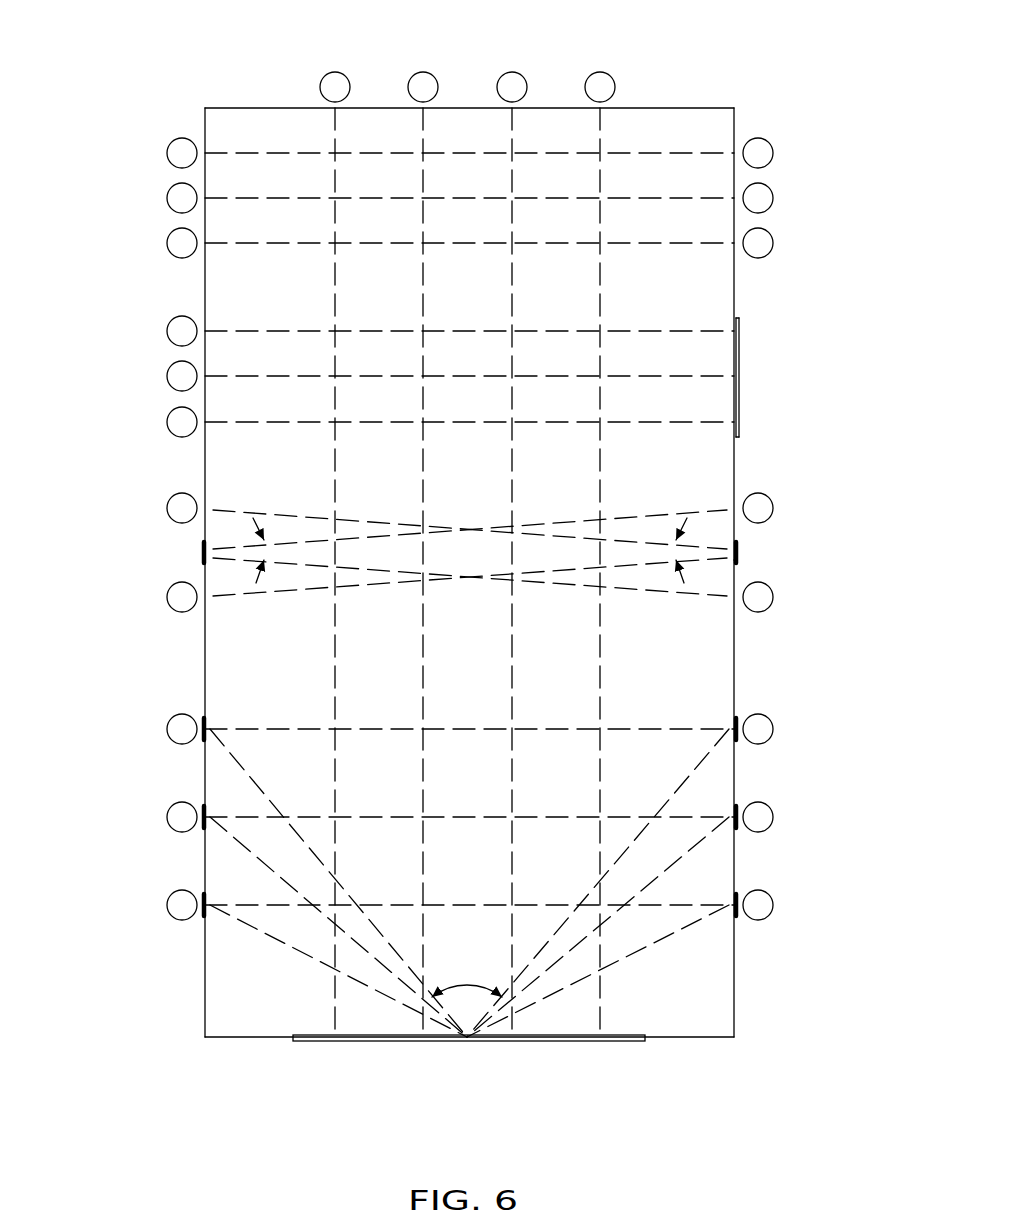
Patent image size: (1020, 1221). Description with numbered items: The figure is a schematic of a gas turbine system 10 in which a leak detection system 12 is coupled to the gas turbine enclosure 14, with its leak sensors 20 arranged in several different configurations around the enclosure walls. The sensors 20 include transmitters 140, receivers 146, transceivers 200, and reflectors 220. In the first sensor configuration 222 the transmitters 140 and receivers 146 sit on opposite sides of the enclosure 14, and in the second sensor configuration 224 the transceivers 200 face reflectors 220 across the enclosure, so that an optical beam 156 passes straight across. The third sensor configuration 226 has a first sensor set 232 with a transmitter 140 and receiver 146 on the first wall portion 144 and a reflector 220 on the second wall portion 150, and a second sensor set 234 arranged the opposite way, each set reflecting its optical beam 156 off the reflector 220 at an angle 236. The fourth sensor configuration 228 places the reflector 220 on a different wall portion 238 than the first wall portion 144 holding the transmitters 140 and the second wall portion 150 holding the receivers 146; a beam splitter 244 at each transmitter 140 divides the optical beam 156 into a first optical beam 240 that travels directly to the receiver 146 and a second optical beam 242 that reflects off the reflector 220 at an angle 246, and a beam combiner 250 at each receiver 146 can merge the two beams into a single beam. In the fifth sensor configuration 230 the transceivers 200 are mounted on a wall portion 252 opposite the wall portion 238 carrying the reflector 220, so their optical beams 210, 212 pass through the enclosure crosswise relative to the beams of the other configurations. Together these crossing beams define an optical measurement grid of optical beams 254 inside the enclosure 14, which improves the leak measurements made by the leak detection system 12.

The gas turbine system 10 is at (782, 1058).
The leak detection system 12 is at (806, 46).
The gas turbine enclosure 14 is at (735, 1006).
The leak sensors 20 is at (99, 64).
The transmitters 140 is at (167, 243).
The first wall portion 144 is at (205, 117).
The receivers 146 is at (773, 243).
The second wall portion 150 is at (738, 121).
The optical beam 156 is at (248, 153).
The transceivers 200 is at (408, 87).
The optical beam 210 is at (424, 320).
The optical beam 212 is at (218, 331).
The reflectors 220 is at (740, 362).
The first sensor configuration 222 is at (124, 253).
The second sensor configuration 224 is at (124, 317).
The third sensor configuration 226 is at (127, 623).
The fourth sensor configuration 228 is at (127, 687).
The fifth sensor configuration 230 is at (693, 79).
The first sensor set 232 is at (124, 457).
The second sensor set 234 is at (797, 461).
The angle 236 is at (258, 586).
The wall portion 238 is at (680, 1040).
The first optical beam 240 is at (470, 733).
The second optical beam 242 is at (299, 979).
The beam splitter 244 is at (203, 722).
The angle 246 is at (465, 980).
The beam combiner 250 is at (738, 722).
The wall portion 252 is at (296, 107).
The optical measurement grid of optical beams 254 is at (257, 134).